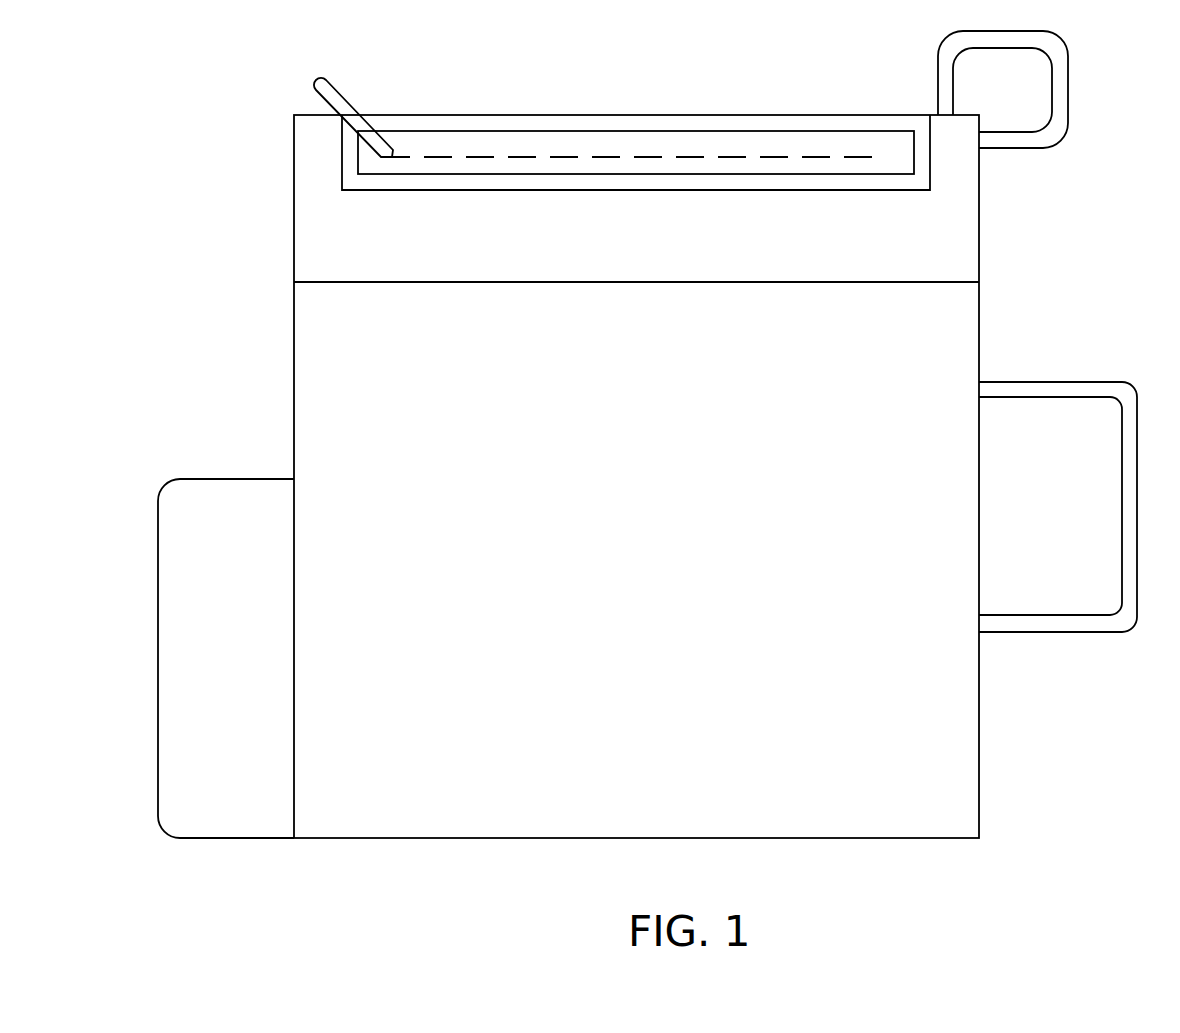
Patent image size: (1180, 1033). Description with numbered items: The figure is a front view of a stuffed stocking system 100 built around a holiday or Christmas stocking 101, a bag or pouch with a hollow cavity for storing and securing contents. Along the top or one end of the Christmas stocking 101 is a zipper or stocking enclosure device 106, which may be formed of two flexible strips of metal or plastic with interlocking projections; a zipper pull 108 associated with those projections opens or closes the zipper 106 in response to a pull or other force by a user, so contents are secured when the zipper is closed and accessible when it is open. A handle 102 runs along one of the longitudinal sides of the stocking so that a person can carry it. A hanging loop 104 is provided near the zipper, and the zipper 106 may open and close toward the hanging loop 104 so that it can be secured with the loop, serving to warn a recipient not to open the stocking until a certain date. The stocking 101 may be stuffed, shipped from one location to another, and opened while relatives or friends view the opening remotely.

The stuffed stocking system 100 is at (1054, 263).
The Christmas stocking 101 is at (979, 335).
The handle 102 is at (1080, 382).
The hanging loop 104 is at (1068, 88).
The zipper 106 is at (588, 157).
The zipper pull 108 is at (336, 100).